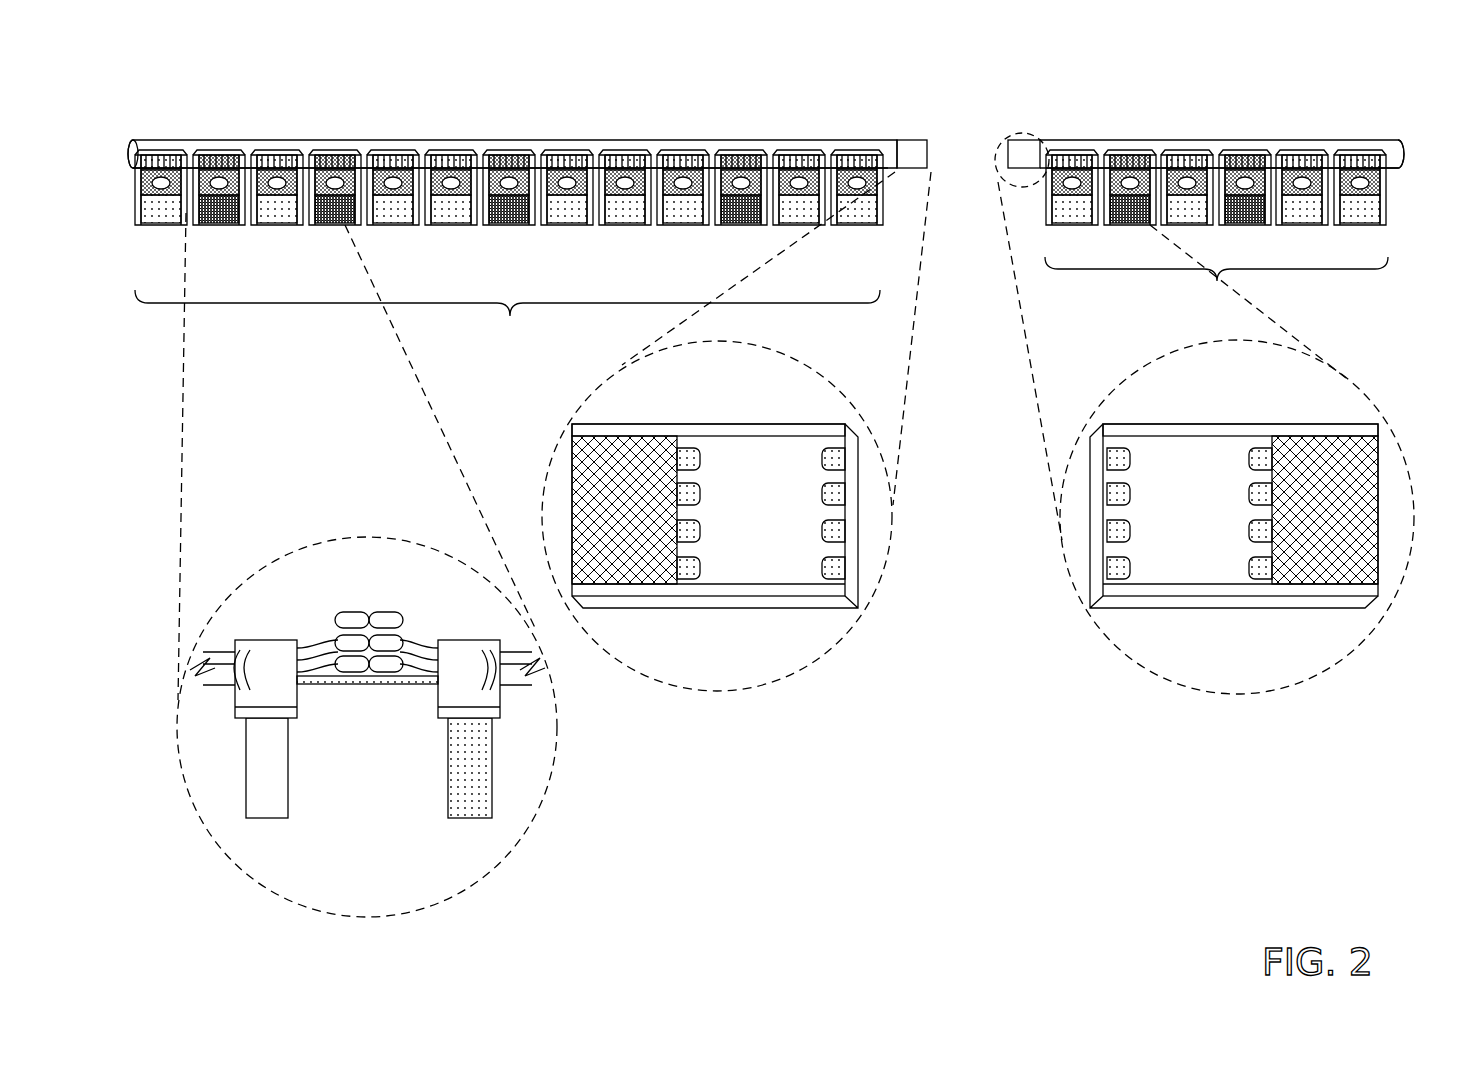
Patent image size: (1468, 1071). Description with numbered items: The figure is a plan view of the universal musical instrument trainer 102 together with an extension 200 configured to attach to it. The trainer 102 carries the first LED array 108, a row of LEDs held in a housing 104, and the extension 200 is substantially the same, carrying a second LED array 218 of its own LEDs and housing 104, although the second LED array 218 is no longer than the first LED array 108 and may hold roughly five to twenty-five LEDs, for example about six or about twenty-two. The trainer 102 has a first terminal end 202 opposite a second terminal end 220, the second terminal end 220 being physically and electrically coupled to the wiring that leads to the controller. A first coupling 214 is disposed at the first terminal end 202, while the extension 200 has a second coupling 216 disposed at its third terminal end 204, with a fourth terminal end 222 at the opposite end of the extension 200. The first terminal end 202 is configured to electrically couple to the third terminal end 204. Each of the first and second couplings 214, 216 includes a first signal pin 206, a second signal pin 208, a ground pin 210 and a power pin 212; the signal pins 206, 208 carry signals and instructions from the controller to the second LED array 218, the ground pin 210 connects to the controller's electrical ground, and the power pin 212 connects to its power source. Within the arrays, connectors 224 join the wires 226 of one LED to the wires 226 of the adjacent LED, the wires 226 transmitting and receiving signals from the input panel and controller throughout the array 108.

The universal musical instrument trainer 102 is at (484, 126).
The housing 104 is at (1257, 140).
The first LED array 108 is at (509, 484).
The extension 200 is at (1247, 187).
The first terminal end 202 is at (906, 140).
The third terminal end 204 is at (1020, 140).
The first signal pin 206 is at (838, 462).
The second signal pin 208 is at (838, 496).
The ground pin 210 is at (838, 532).
The power pin 212 is at (838, 570).
The first coupling 214 is at (713, 424).
The second coupling 216 is at (1238, 424).
The second LED array 218 is at (1242, 234).
The second terminal end 220 is at (130, 160).
The fourth terminal end 222 is at (1404, 154).
The connector 224 is at (356, 600).
The wire 226 is at (425, 614).